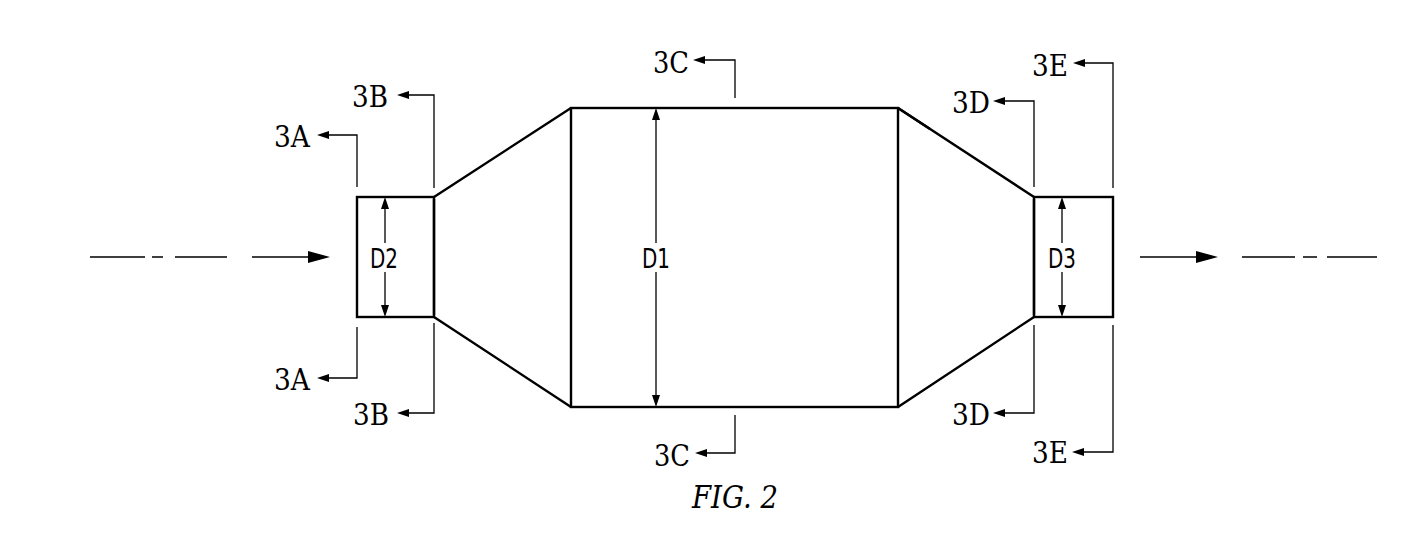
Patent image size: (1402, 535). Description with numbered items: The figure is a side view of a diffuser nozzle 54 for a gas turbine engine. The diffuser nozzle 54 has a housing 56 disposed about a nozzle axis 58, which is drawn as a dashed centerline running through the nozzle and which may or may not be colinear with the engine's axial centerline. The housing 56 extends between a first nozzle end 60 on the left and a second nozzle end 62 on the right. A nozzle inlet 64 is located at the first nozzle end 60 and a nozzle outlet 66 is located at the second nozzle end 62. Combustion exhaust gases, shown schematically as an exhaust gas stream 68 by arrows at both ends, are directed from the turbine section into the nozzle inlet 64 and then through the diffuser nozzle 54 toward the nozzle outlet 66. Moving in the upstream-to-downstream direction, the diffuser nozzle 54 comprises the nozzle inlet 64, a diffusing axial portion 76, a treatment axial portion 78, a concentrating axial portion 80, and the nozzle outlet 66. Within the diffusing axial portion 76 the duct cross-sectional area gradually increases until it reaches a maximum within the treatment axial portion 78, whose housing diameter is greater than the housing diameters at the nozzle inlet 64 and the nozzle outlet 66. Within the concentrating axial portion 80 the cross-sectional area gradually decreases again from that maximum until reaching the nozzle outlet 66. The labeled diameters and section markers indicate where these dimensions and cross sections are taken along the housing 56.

The diffuser nozzle 54 is at (1201, 103).
The housing 56 is at (808, 107).
The nozzle axis 58 is at (1368, 257).
The first nozzle end 60 is at (336, 302).
The second nozzle end 62 is at (1132, 300).
The nozzle inlet 64 is at (410, 207).
The nozzle outlet 66 is at (1093, 207).
The exhaust gas stream 68 is at (292, 256).
The diffusing axial portion 76 is at (520, 122).
The treatment axial portion 78 is at (872, 79).
The concentrating axial portion 80 is at (930, 96).